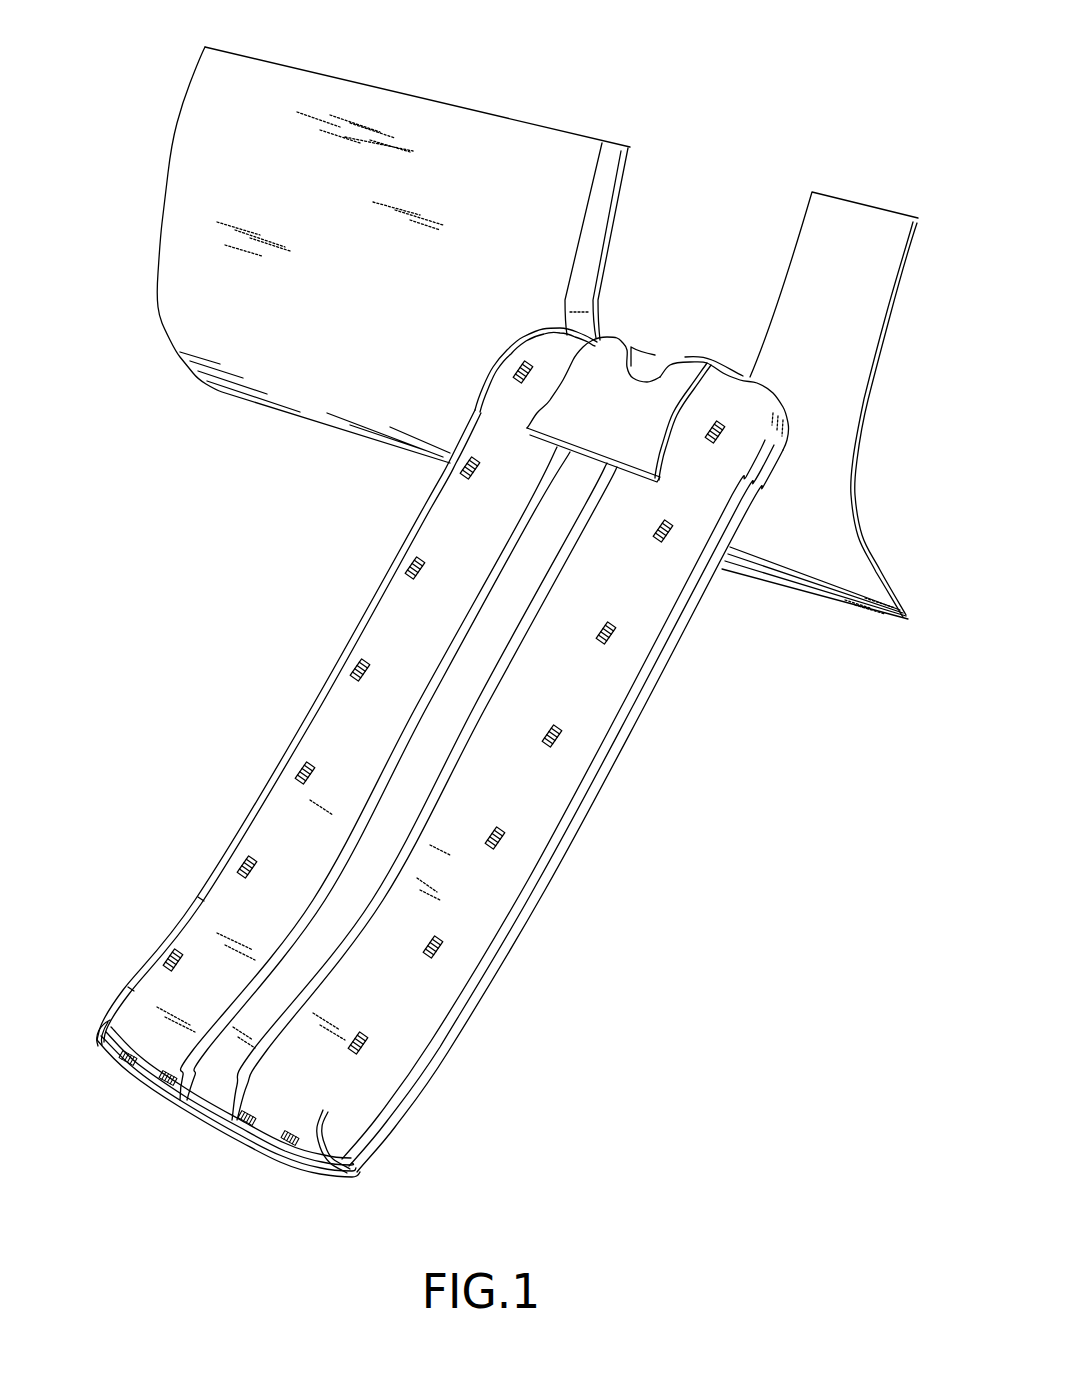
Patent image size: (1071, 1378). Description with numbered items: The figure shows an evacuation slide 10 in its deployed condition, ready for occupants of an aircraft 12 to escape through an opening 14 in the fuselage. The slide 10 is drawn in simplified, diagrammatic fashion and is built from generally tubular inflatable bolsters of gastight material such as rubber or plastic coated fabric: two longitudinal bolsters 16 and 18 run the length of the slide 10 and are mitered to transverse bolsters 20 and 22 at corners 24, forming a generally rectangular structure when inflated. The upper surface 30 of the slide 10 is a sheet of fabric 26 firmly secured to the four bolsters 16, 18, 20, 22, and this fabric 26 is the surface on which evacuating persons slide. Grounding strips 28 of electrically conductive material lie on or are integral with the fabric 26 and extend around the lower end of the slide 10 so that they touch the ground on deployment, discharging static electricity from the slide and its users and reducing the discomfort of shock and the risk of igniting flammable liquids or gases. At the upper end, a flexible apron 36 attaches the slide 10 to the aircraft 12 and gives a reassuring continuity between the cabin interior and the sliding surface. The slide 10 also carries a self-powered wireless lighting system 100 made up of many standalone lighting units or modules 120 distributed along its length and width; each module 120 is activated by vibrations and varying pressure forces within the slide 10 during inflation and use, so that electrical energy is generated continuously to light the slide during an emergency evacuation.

The self-powered wireless lighting system 100 is at (733, 190).
The aircraft 12 is at (310, 444).
The opening 14 is at (611, 211).
The evacuation slide 10 is at (552, 933).
The longitudinal bolster 16 is at (338, 658).
The longitudinal bolster 18 is at (590, 830).
The transverse bolster 20 is at (726, 378).
The transverse bolster 22 is at (142, 1090).
The corners 24 is at (95, 1033).
The sheet of fabric 26 is at (210, 980).
The grounding strips 28 is at (407, 740).
The upper surface 30 is at (270, 795).
The apron 36 is at (623, 343).
The lighting units or modules 120 is at (516, 368).